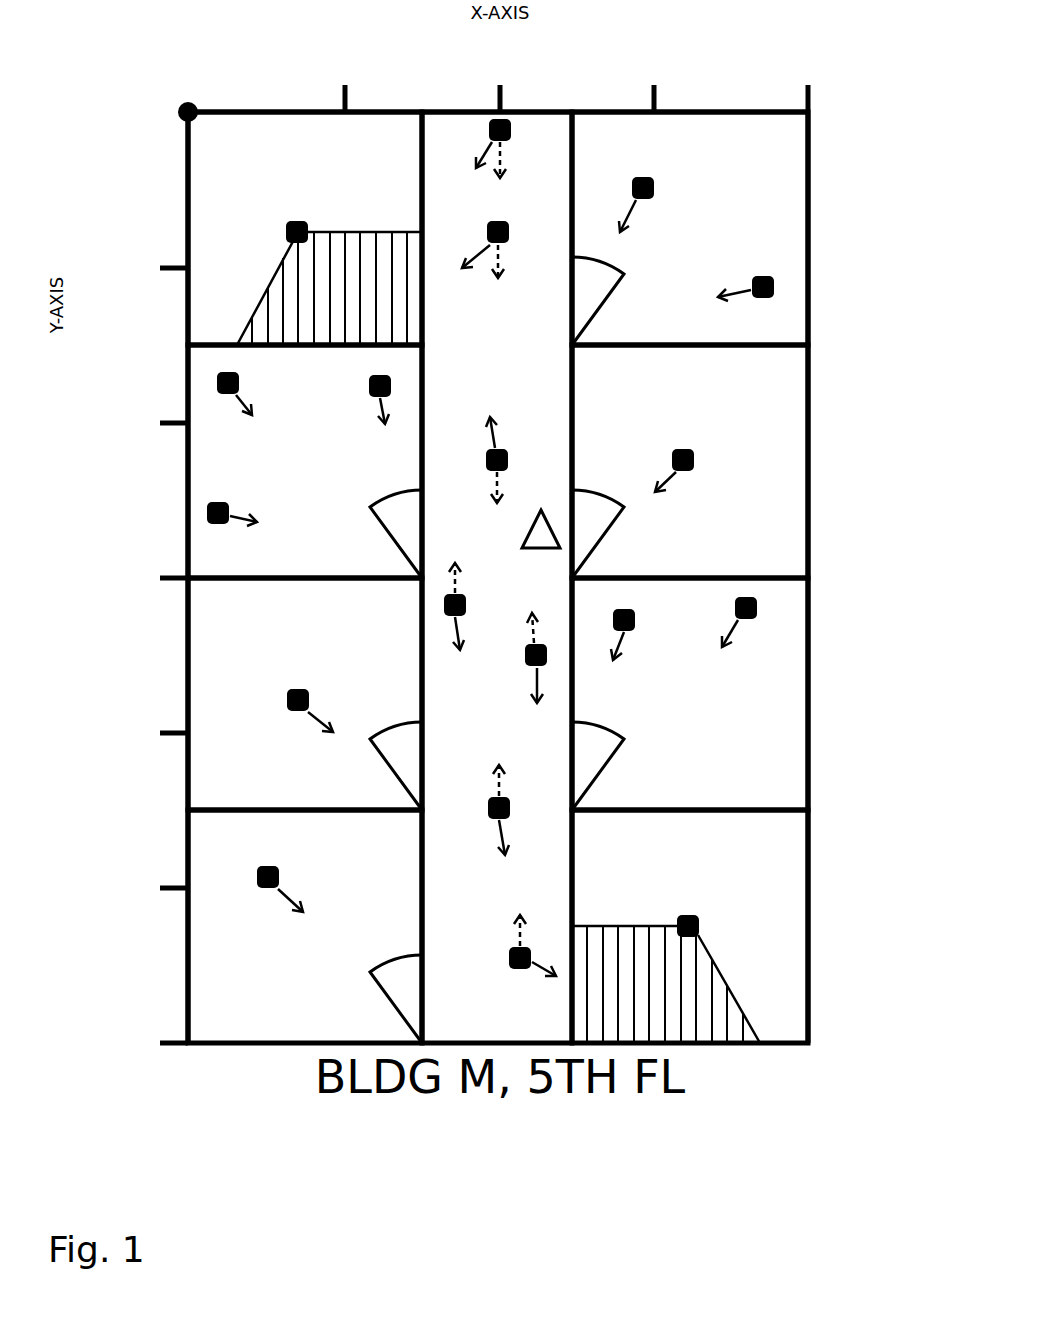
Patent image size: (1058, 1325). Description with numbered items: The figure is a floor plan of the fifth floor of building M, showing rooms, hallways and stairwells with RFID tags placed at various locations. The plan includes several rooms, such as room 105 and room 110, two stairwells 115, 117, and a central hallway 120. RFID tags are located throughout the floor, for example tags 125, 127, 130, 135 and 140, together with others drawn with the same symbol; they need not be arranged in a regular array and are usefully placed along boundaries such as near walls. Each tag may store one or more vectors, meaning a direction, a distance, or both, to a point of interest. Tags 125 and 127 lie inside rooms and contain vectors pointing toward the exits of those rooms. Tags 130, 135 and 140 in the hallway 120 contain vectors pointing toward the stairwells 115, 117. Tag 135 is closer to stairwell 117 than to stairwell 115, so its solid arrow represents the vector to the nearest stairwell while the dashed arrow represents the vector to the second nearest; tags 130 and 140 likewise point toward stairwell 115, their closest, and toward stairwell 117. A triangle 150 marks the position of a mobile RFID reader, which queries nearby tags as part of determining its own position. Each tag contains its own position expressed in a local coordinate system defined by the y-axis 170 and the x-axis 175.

The room 105 is at (305, 461).
The room 110 is at (264, 782).
The stairwell 115 is at (762, 864).
The stairwell 117 is at (282, 167).
The hallway 120 is at (498, 577).
The RFID tag 125 is at (686, 447).
The RFID tag 127 is at (244, 378).
The RFID tag 130 is at (520, 663).
The RFID tag 135 is at (513, 448).
The RFID tag 140 is at (470, 605).
The position of mobile RFID tag reader 150 is at (518, 530).
The y-axis 170 is at (112, 1073).
The x-axis 175 is at (850, 42).